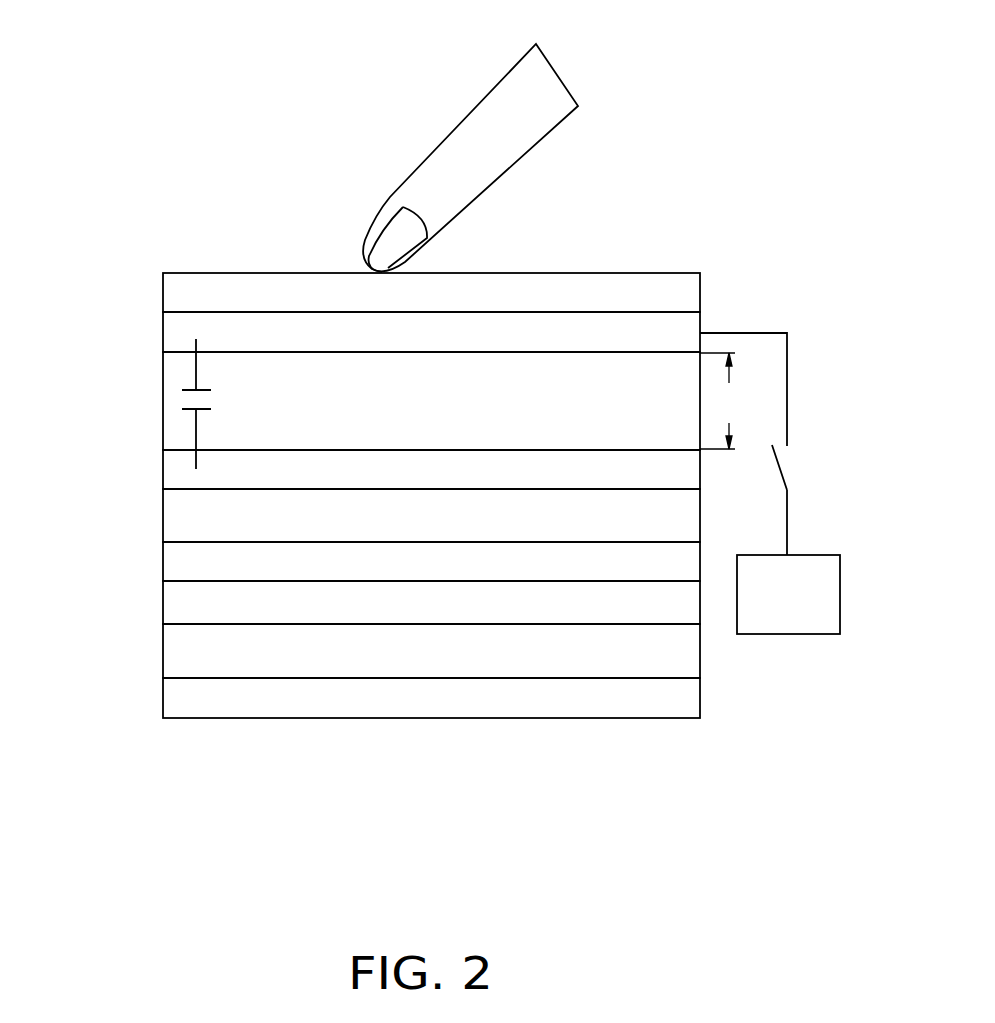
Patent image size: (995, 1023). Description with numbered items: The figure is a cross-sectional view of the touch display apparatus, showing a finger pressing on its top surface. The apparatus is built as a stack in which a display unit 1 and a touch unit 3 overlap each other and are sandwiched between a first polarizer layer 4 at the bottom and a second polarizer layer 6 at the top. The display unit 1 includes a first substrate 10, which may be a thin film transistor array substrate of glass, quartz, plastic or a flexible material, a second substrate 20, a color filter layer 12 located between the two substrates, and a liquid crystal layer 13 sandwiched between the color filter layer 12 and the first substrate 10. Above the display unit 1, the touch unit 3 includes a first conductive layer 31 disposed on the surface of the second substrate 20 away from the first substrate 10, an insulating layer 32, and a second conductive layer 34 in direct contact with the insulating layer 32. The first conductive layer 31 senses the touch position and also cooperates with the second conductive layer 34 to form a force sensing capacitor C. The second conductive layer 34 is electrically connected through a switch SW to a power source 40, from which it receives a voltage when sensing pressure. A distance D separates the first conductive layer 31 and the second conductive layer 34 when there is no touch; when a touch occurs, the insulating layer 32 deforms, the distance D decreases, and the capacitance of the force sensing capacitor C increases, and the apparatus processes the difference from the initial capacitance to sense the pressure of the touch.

The second polarizer layer 6 is at (168, 295).
The touch unit 3 is at (374, 400).
The second conductive layer 34 is at (173, 337).
The insulating layer 32 is at (173, 430).
The first conductive layer 31 is at (398, 469).
The display unit 1 is at (375, 583).
The second substrate 20 is at (180, 523).
The color filter layer 12 is at (180, 566).
The liquid crystal layer 13 is at (180, 614).
The first substrate 10 is at (395, 651).
The first polarizer layer 4 is at (187, 703).
The force sensing capacitor C is at (207, 404).
The distance D is at (720, 401).
The switch SW is at (767, 444).
The power source 40 is at (762, 634).